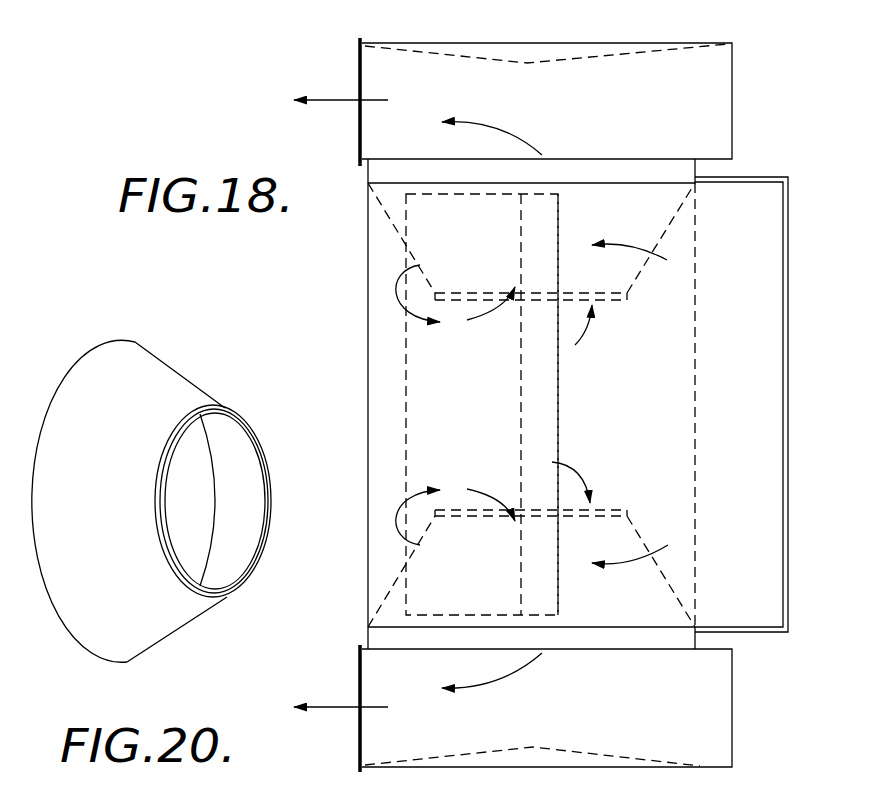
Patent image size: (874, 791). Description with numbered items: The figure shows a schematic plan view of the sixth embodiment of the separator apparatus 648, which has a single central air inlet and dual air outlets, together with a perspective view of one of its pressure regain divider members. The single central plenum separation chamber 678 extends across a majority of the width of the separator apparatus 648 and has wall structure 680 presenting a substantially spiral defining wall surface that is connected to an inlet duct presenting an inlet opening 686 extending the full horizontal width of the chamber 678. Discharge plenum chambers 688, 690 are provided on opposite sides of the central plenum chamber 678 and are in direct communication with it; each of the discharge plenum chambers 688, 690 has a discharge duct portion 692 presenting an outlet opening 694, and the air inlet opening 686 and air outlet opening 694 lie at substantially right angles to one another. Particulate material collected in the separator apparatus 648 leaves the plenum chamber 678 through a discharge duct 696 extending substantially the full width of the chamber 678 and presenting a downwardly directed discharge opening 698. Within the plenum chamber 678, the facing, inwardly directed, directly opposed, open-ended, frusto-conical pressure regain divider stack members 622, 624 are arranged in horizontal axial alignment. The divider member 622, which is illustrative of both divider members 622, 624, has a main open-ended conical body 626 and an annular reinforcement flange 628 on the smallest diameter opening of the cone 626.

In FIG. 18, the pressure regain divider stack member 622 is at (643, 288).
In FIG. 20, the pressure regain divider stack member 622 is at (185, 363).
In FIG. 18, the pressure regain divider stack member 624 is at (638, 518).
In FIG. 18, the conical body 626 is at (677, 224).
In FIG. 20, the conical body 626 is at (83, 368).
In FIG. 18, the annular reinforcement flange 628 is at (460, 297).
In FIG. 20, the annular reinforcement flange 628 is at (255, 565).
In FIG. 18, the separator apparatus 648 is at (777, 148).
In FIG. 18, the central plenum separation chamber 678 is at (358, 272).
In FIG. 18, the wall structure 680 is at (380, 441).
In FIG. 18, the inlet opening 686 is at (748, 366).
In FIG. 18, the discharge plenum chamber 688 is at (738, 46).
In FIG. 18, the discharge plenum chamber 690 is at (738, 704).
In FIG. 18, the discharge duct portion 692 is at (380, 72).
In FIG. 18, the outlet opening 694 is at (360, 118).
In FIG. 18, the discharge duct 696 is at (432, 408).
In FIG. 18, the discharge opening 698 is at (545, 383).